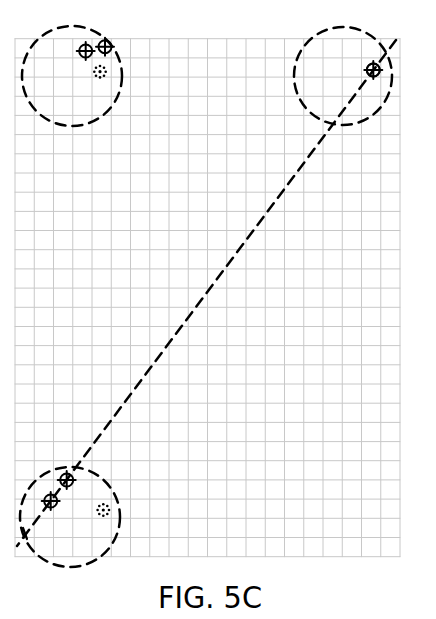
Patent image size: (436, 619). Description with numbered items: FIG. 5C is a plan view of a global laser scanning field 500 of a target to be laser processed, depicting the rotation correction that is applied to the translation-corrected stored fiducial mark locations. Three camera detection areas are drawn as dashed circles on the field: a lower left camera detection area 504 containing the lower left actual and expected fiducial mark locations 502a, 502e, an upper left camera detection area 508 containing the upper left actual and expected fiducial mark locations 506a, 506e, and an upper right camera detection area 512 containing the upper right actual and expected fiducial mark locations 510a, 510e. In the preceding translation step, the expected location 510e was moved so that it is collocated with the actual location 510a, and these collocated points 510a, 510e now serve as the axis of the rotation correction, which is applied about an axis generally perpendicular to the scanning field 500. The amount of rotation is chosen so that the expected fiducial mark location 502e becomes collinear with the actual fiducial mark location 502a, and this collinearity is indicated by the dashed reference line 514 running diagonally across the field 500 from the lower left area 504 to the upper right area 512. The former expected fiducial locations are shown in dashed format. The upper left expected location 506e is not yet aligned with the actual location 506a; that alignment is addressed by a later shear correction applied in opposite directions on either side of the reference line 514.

The global laser scanning field 500 is at (247, 345).
The lower left actual fiducial mark location 502a is at (48, 494).
The lower left expected fiducial mark location 502e is at (74, 481).
The camera detection area 504 is at (117, 538).
The upper left actual fiducial mark location 506a is at (86, 58).
The upper left expected fiducial mark location 506e is at (112, 44).
The camera detection area 508 is at (47, 100).
The upper right actual fiducial mark location 510a is at (366, 68).
The upper right expected fiducial mark location 510e is at (375, 78).
The camera detection area 512 is at (292, 87).
The reference line 514 is at (231, 265).